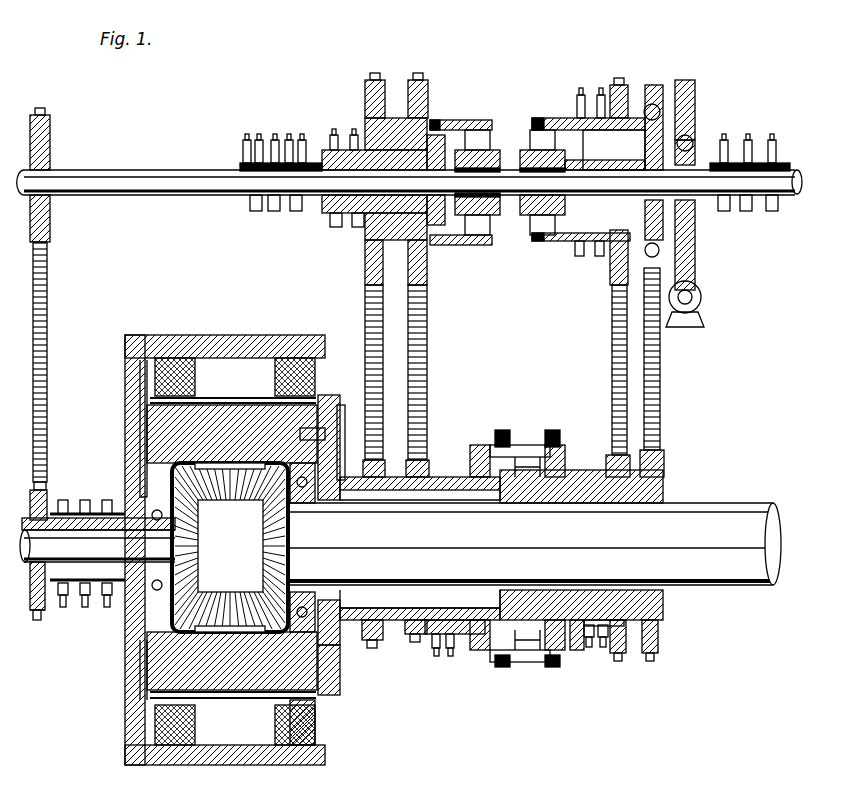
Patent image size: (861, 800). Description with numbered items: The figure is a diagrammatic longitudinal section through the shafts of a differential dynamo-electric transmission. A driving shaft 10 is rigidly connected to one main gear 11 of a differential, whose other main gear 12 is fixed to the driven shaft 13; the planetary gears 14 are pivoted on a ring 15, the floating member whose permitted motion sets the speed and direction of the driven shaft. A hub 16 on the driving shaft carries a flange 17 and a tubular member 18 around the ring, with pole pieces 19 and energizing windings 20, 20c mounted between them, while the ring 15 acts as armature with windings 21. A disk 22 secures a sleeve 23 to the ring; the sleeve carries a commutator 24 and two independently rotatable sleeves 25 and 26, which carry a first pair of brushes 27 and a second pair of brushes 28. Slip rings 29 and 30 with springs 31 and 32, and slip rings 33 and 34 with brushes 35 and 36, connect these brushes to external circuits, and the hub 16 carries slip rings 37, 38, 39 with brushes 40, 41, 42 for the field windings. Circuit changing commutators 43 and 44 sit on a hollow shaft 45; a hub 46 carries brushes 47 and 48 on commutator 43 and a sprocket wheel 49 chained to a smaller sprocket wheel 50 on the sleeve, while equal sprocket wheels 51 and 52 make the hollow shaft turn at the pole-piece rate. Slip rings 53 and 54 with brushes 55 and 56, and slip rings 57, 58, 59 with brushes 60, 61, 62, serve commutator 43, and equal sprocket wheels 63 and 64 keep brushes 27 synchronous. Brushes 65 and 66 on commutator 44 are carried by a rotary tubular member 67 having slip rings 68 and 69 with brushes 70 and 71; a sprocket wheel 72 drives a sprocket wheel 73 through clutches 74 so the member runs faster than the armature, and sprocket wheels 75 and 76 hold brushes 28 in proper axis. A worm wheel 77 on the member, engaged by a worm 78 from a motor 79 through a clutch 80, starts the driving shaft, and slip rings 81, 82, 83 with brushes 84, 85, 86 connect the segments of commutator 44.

The driving shaft 10 is at (140, 546).
The main gear 11 is at (229, 547).
The main gear 12 is at (290, 556).
The driven shaft 13 is at (738, 512).
The planetary gears 14 is at (246, 502).
The ring 15 is at (237, 680).
The hub 16 is at (42, 615).
The flange 17 is at (126, 686).
The tubular member 18 is at (152, 758).
The pole pieces 19 is at (222, 365).
The energizing winding 20 is at (283, 385).
The energizing winding 20c is at (316, 715).
The windings 21 is at (330, 400).
The disk 22 is at (327, 635).
The sleeve 23 is at (665, 486).
The commutator 24 is at (526, 630).
The sleeve 25 is at (395, 640).
The sleeve 26 is at (625, 633).
The brushes 27 is at (505, 462).
The brushes 28 is at (542, 458).
The slip ring 29 is at (435, 647).
The slip ring 30 is at (447, 657).
The spring 31 is at (450, 653).
The spring 32 is at (452, 658).
The slip ring 33 is at (578, 652).
The slip ring 34 is at (604, 650).
The brush 35 is at (590, 650).
The brush 36 is at (608, 647).
The slip ring 37 is at (63, 500).
The slip ring 38 is at (85, 500).
The slip ring 39 is at (107, 500).
The brush 40 is at (63, 607).
The brush 41 is at (85, 607).
The brush 42 is at (107, 607).
The circuit changing commutator 43 is at (488, 130).
The circuit changing commutator 44 is at (540, 118).
The hollow shaft 45 is at (150, 170).
The hub 46 is at (367, 120).
The brush 47 is at (470, 130).
The brush 48 is at (468, 228).
The sprocket wheel 49 is at (378, 78).
The sprocket wheel 50 is at (340, 480).
The sprocket wheel 51 is at (47, 513).
The sprocket wheel 52 is at (50, 160).
The slip ring 53 is at (350, 215).
The slip ring 54 is at (332, 220).
The brush 55 is at (354, 130).
The brush 56 is at (334, 129).
The slip ring 57 is at (242, 167).
The slip ring 58 is at (258, 134).
The slip ring 59 is at (290, 134).
The brush 60 is at (247, 140).
The brush 61 is at (274, 134).
The brush 62 is at (300, 134).
The sprocket wheel 63 is at (418, 466).
The sprocket wheel 64 is at (427, 270).
The brush 65 is at (537, 140).
The brush 66 is at (540, 228).
The rotary tubular member 67 is at (635, 118).
The slip ring 68 is at (578, 255).
The slip ring 69 is at (598, 255).
The brush 70 is at (580, 88).
The brush 71 is at (600, 88).
The sprocket wheel 72 is at (662, 462).
The sprocket wheel 73 is at (653, 104).
The clutch 74 is at (697, 105).
The sprocket wheel 75 is at (606, 462).
The sprocket wheel 76 is at (612, 270).
The worm wheel 77 is at (697, 112).
The worm 78 is at (702, 296).
The motor 79 is at (702, 300).
The clutch 80 is at (694, 142).
The slip ring 81 is at (724, 212).
The slip ring 82 is at (746, 212).
The slip ring 83 is at (771, 212).
The brush 84 is at (726, 140).
The brush 85 is at (750, 140).
The brush 86 is at (775, 148).